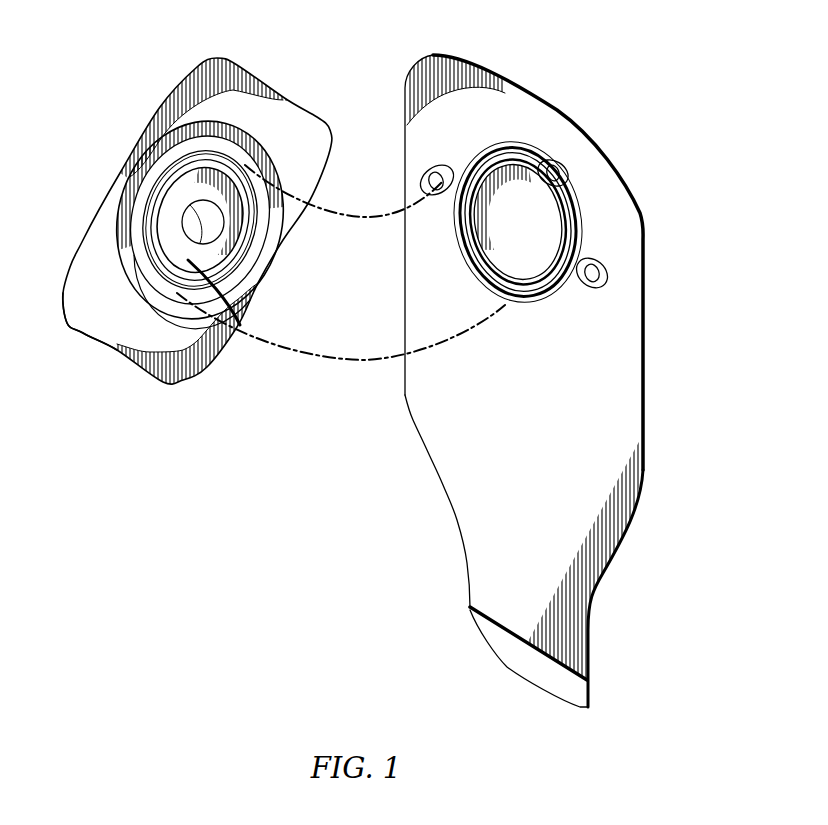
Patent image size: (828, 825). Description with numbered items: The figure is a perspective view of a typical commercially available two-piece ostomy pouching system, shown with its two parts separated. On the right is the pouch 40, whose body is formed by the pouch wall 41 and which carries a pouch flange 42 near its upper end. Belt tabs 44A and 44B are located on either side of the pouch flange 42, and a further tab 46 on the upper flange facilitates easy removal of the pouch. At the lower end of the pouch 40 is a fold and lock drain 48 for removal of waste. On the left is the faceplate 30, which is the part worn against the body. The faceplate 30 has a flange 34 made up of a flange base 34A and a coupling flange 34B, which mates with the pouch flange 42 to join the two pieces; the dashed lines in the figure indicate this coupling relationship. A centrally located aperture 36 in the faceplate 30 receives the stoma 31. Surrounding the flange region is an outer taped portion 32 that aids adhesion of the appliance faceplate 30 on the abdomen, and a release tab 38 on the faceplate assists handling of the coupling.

The faceplate 30 is at (290, 97).
The stoma 31 is at (212, 214).
The outer taped portion 32 is at (102, 322).
The coupling ring flange 34 is at (142, 189).
The flange base 34A is at (159, 300).
The coupling flange 34B is at (236, 265).
The aperture 36 is at (222, 243).
The release tab 38 is at (240, 325).
The pouch 40 is at (533, 97).
The pouch wall 41 is at (556, 130).
The pouch flange 42 is at (503, 285).
The belt tab 44A is at (441, 167).
The belt tab 44B is at (596, 262).
The third ear tab 46 is at (569, 175).
The fold and lock drain 48 is at (545, 676).